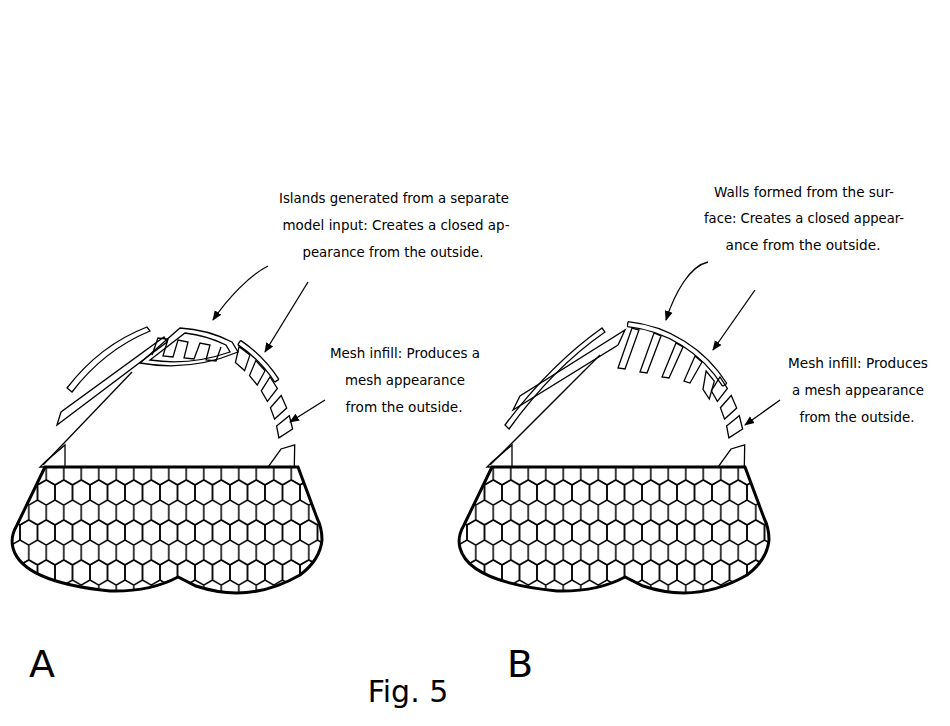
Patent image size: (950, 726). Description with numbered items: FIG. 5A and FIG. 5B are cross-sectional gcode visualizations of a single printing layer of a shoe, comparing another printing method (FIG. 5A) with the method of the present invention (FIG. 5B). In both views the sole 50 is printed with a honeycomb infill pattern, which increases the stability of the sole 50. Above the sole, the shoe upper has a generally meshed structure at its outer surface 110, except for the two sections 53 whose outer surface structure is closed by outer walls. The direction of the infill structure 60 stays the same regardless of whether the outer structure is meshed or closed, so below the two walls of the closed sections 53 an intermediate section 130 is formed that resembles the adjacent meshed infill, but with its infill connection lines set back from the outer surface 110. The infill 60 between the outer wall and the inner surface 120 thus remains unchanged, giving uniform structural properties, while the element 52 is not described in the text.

In FIG. 5A, the sole 50 is at (318, 588).
In FIG. 5B, the sole 50 is at (765, 603).
In FIG. 5A, the inner surface 120 is at (175, 395).
In FIG. 5B, the inner surface 120 is at (575, 364).
In FIG. 5B, the intermediate section 130 is at (640, 250).
In FIG. 5B, the sections with closed outer surface structure 53 is at (651, 318).
In FIG. 5B, the outer surface 110 is at (551, 337).
In FIG. 5B, the infill structure 60 is at (617, 345).
In FIG. 5B, the outer wall strip 52 is at (514, 386).